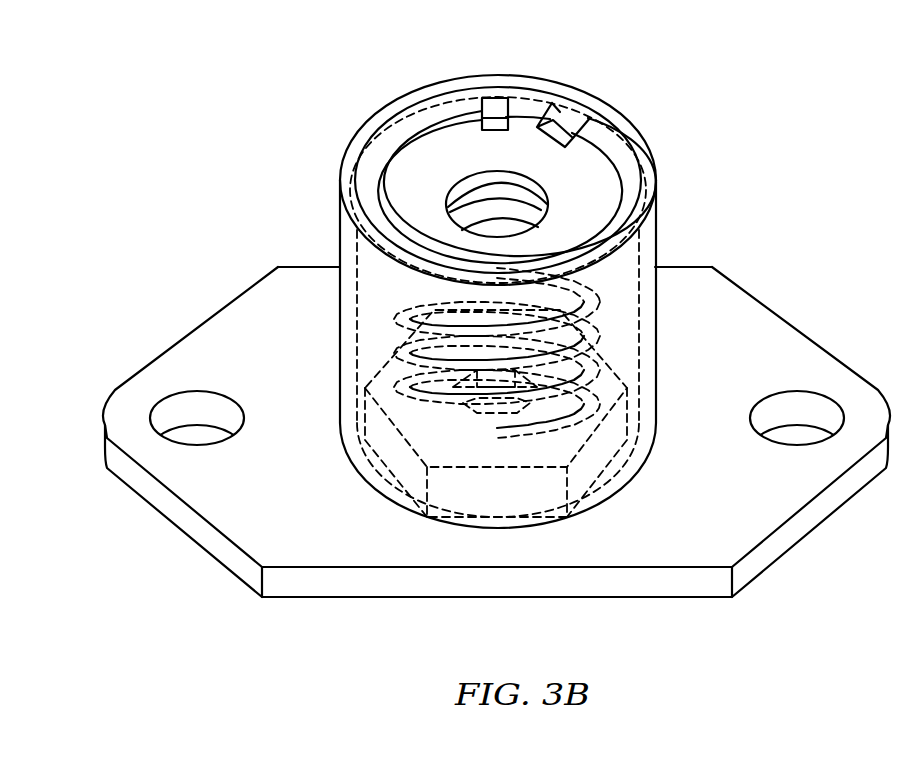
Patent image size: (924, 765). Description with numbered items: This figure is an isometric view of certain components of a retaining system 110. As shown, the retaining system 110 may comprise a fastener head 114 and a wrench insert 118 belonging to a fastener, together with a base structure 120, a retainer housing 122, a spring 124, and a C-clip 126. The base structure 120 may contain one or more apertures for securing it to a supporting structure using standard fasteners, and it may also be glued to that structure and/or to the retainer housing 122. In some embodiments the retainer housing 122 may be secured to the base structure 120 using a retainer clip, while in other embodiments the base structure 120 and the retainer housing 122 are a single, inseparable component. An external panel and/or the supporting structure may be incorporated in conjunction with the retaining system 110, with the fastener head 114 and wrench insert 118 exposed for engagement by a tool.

The retaining system 110 is at (263, 102).
The fastener head 114 is at (373, 422).
The wrench insert 118 is at (519, 403).
The base structure 120 is at (762, 365).
The retainer housing 122 is at (335, 225).
The spring 124 is at (603, 324).
The C-clip 126 is at (582, 179).